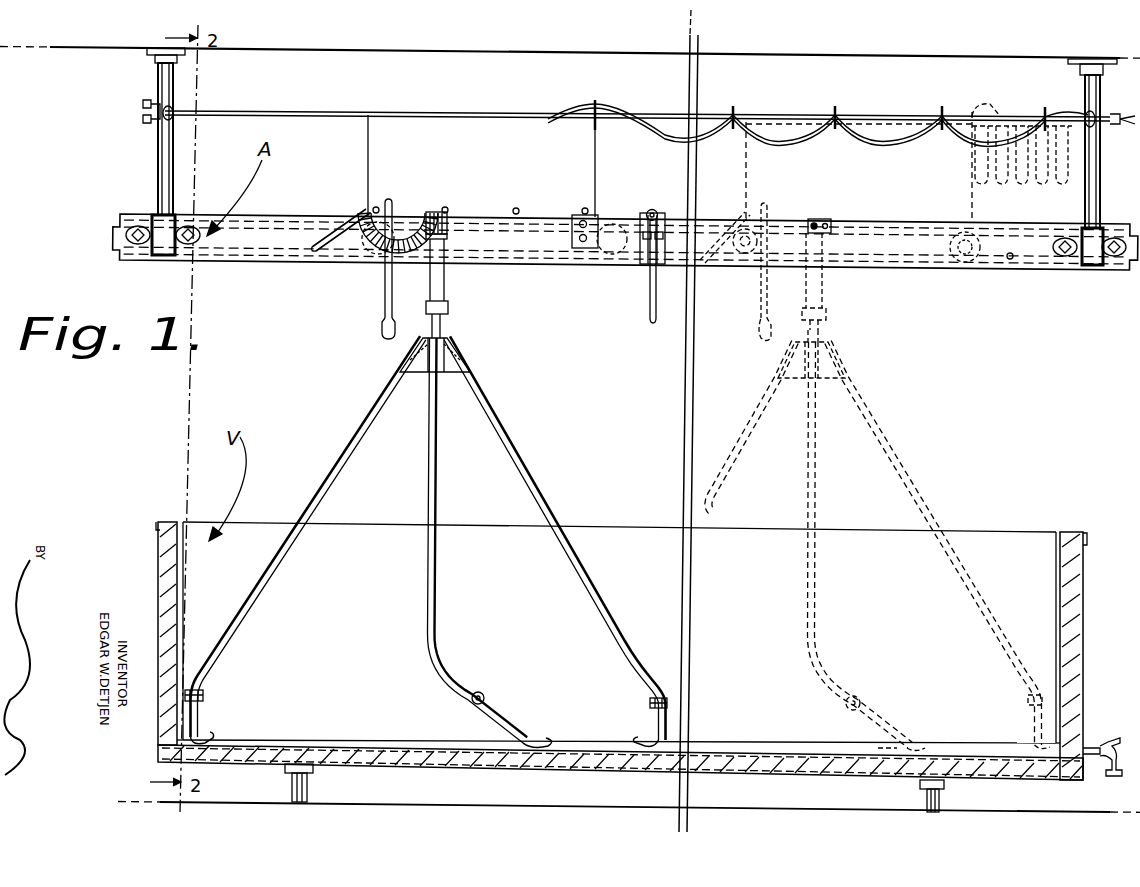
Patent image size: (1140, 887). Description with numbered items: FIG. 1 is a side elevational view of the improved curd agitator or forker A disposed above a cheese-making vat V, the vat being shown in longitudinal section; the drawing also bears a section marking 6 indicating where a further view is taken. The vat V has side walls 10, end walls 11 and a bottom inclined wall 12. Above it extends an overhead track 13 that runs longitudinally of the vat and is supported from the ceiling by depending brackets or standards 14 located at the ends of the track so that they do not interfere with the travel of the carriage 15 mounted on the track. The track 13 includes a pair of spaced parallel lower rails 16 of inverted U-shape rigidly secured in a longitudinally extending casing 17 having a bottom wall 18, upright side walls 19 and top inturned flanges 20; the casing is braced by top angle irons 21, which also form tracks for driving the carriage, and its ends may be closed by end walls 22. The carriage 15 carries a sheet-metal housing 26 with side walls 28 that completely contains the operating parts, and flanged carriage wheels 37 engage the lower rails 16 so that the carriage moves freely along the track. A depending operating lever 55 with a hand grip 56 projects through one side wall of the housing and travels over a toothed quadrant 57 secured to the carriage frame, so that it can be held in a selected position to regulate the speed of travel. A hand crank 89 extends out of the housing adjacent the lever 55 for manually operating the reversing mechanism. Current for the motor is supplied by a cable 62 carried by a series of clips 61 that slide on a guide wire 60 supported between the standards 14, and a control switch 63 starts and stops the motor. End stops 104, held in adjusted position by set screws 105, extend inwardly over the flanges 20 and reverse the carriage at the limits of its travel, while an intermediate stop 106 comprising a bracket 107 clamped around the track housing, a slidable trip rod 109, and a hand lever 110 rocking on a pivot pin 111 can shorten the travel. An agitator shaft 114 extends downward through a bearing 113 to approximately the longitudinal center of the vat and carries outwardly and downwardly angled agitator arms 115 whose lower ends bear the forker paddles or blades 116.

The carrier beam 6 is at (311, 211).
The side walls 10 is at (890, 547).
The end walls 11 is at (1070, 614).
The bottom inclined wall 12 is at (730, 765).
The overhead track 13 is at (905, 249).
The brackets or standards 14 is at (158, 172).
The carriage 15 is at (462, 134).
The rails 16 is at (1012, 262).
The casing 17 is at (1026, 247).
The bottom wall 18 is at (968, 264).
The side walls 19 is at (918, 242).
The top inturned flanges 20 is at (860, 220).
The angle irons 21 is at (868, 244).
The end walls 22 is at (116, 240).
The housing 26 is at (574, 150).
The side walls 28 is at (576, 166).
The flanged carriage wheels 37 is at (350, 258).
The operating lever 55 is at (385, 290).
The hand grip 56 is at (383, 330).
The quadrant 57 is at (404, 257).
The guide wire 60 is at (368, 112).
The clips 61 is at (838, 110).
The cable 62 is at (875, 132).
The control switch 63 is at (580, 215).
The hand crank 89 is at (312, 252).
The end stops 104 is at (828, 219).
The set screws 105 is at (813, 219).
The intermediate stop 106 is at (660, 214).
The bracket 107 is at (648, 209).
The trip rod 109 is at (644, 220).
The hand lever 110 is at (650, 316).
The pivot pin 111 is at (640, 264).
The bearing 113 is at (445, 290).
The agitator shaft 114 is at (443, 330).
The agitator arms 115 is at (422, 498).
The agitator or forker paddles or blades 116 is at (204, 703).